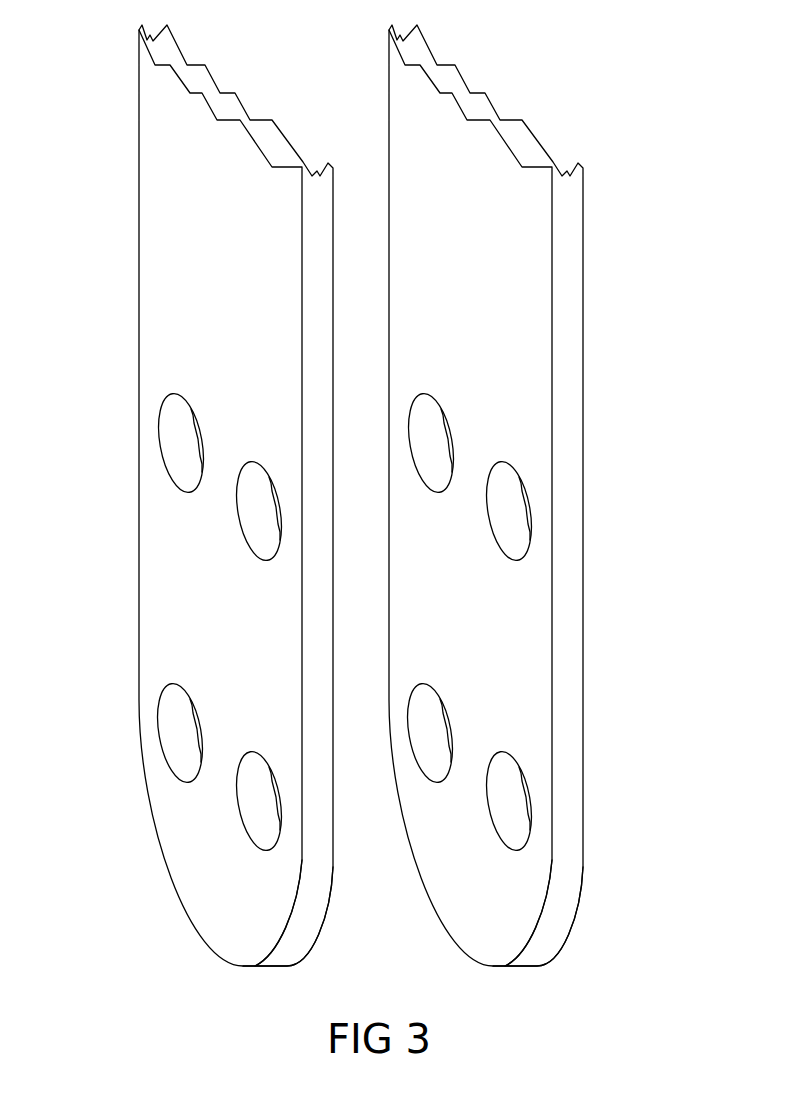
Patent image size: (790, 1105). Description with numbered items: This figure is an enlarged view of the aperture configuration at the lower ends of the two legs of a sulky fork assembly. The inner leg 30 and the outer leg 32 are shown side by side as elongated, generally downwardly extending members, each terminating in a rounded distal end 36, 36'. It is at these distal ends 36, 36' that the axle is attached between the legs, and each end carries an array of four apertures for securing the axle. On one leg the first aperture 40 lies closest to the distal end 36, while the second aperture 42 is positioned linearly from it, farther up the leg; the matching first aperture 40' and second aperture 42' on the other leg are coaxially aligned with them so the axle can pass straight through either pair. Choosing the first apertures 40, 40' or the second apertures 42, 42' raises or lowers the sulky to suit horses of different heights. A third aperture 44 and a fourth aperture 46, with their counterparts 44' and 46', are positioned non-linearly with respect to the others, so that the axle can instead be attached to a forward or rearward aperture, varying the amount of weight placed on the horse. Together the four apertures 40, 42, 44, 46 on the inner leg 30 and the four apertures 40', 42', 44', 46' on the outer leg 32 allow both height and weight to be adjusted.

The inner leg 30 is at (565, 283).
The outer leg 32 is at (158, 200).
The distal end 36 is at (262, 945).
The distal end 36' is at (538, 945).
The first aperture 40 is at (194, 802).
The second aperture 42 is at (183, 511).
The third aperture 44 is at (135, 733).
The fourth aperture 46 is at (136, 443).
The first aperture 40' is at (562, 801).
The second aperture 42' is at (571, 511).
The third aperture 44' is at (518, 733).
The fourth aperture 46' is at (518, 443).